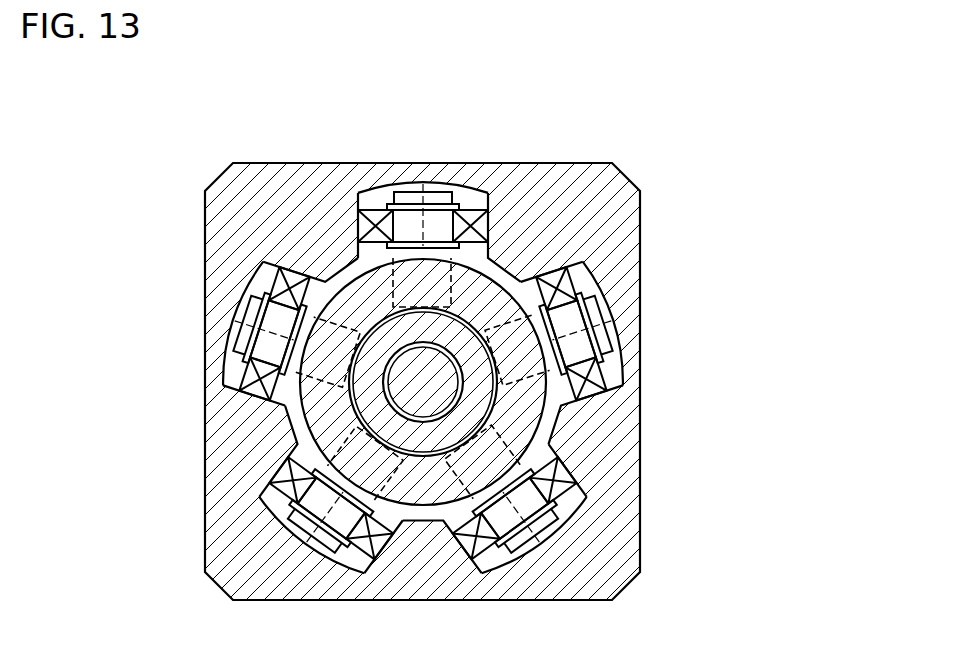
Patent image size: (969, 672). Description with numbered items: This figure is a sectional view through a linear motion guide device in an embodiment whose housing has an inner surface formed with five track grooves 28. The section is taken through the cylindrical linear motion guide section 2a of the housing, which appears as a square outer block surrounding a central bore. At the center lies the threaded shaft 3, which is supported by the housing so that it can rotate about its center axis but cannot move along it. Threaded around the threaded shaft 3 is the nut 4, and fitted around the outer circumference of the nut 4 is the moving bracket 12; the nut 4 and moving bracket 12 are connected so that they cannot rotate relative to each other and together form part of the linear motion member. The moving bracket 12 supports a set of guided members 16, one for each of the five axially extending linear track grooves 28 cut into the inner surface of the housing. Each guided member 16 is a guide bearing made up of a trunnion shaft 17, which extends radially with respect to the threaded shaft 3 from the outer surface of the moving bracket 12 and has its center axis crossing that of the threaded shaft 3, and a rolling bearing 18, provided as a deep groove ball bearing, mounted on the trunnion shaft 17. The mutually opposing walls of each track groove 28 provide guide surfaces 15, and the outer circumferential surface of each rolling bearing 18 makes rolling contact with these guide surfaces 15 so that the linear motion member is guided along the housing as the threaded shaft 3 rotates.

The linear motion guide section 2a is at (598, 162).
The threaded shaft 3 is at (407, 403).
The nut 4 is at (457, 427).
The moving bracket 12 is at (480, 290).
The guide surface 15 is at (486, 196).
The guided member 16 is at (397, 114).
The trunnion shaft 17 is at (407, 223).
The rolling bearing 18 is at (370, 207).
The track groove 28 is at (458, 193).